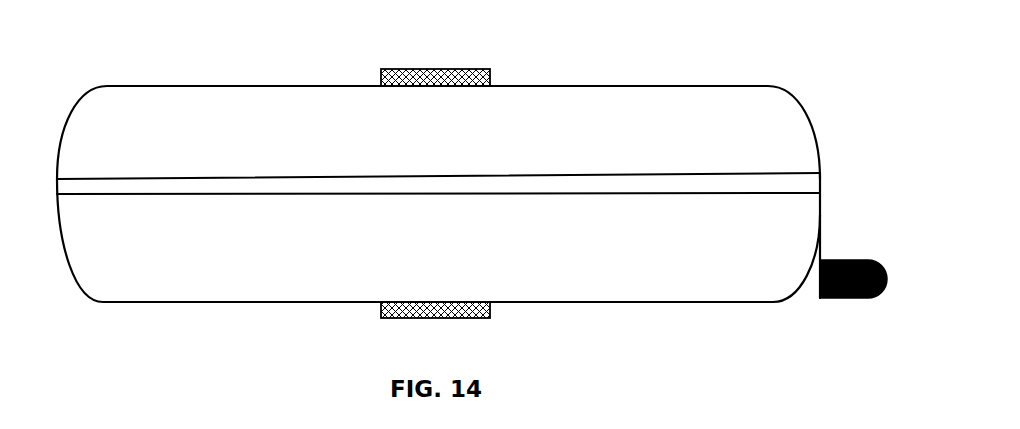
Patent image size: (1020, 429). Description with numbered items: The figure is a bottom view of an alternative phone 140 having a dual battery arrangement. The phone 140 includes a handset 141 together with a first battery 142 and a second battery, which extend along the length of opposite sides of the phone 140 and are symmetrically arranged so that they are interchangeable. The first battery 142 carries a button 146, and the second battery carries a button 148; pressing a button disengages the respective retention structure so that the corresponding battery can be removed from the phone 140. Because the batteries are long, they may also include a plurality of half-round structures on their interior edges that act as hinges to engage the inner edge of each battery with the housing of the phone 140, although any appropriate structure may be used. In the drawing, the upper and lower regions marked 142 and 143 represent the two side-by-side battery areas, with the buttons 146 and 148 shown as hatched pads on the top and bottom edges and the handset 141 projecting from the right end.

The phone 140 is at (474, 188).
The handset 141 is at (793, 298).
The first battery 142 is at (174, 137).
The lower housing section 143 is at (174, 242).
The button 146 is at (462, 68).
The button 148 is at (426, 318).